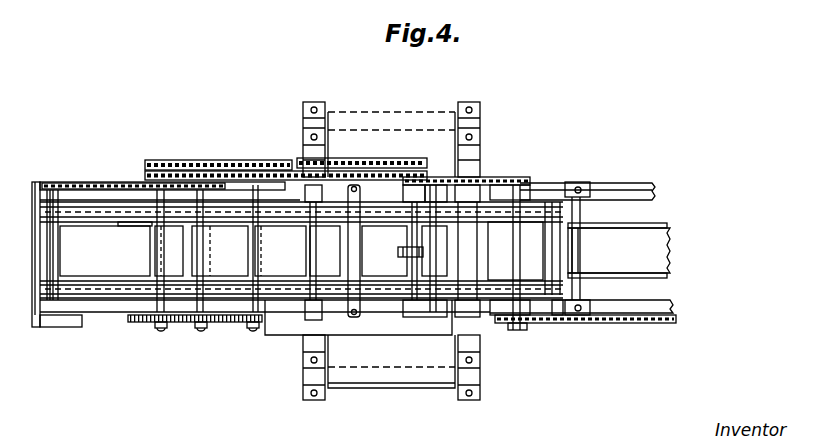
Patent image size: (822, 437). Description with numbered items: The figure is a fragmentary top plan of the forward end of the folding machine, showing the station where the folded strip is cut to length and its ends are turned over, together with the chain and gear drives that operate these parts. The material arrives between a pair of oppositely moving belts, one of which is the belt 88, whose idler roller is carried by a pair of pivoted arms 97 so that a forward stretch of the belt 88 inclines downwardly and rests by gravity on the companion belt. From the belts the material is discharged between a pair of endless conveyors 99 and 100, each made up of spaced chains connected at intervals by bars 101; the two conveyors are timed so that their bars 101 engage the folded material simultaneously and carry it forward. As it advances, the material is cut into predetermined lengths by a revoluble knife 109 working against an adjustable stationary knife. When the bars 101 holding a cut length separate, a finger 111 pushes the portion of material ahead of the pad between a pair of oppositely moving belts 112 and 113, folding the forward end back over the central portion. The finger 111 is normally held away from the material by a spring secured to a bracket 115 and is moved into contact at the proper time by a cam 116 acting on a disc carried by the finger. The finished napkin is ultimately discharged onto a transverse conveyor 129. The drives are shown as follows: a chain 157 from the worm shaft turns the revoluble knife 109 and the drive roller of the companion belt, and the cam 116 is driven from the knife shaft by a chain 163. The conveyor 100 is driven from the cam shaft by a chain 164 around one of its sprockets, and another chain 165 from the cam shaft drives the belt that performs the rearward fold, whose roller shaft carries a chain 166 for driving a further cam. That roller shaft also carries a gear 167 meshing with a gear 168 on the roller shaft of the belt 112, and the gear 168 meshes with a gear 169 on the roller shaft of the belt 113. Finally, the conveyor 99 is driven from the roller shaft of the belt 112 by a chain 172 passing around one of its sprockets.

The chain 172 is at (92, 181).
The chain 166 is at (238, 159).
The chain 165 is at (288, 170).
The chain 164 is at (350, 158).
The conveyor 129 is at (410, 127).
The endless conveyor 100 is at (483, 208).
The chain 163 is at (505, 180).
The revoluble knife 109 is at (523, 230).
The bars 101 is at (563, 218).
The arms 97 is at (652, 222).
The belt 88 is at (663, 238).
The chain 157 is at (627, 323).
The cam 116 is at (424, 252).
The finger 111 is at (378, 258).
The belt 113 is at (287, 258).
The bracket 115 is at (362, 300).
The belt 112 is at (230, 255).
The endless conveyor 99 is at (102, 290).
The gear 167 is at (143, 325).
The gear 168 is at (192, 325).
The gear 169 is at (238, 325).